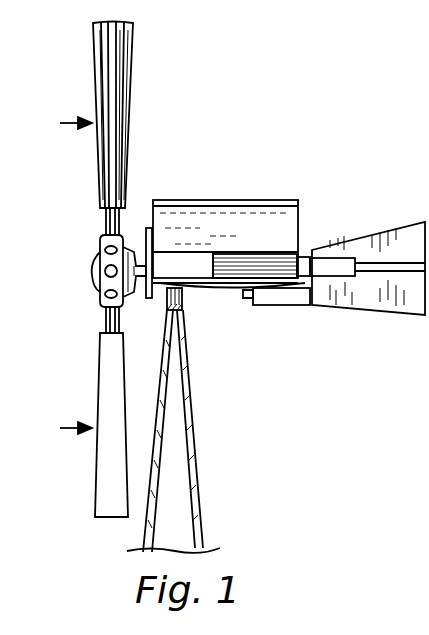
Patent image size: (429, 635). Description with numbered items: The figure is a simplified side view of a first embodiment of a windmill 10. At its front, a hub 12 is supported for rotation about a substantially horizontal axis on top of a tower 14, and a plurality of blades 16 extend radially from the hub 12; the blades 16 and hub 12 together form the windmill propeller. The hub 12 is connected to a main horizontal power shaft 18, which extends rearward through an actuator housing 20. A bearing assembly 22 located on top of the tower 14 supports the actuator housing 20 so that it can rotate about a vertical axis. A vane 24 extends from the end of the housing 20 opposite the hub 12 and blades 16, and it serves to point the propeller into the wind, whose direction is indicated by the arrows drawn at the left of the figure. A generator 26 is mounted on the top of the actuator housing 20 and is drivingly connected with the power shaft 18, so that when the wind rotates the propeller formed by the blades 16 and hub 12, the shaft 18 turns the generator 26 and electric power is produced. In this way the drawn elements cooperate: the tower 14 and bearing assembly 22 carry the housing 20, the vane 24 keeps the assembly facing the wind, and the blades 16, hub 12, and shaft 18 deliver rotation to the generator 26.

The windmill 10 is at (194, 182).
The hub 12 is at (97, 275).
The tower 14 is at (196, 430).
The blades 16 is at (121, 67).
The main horizontal power shaft 18 is at (150, 300).
The actuator housing 20 is at (262, 272).
The bearing assembly 22 is at (185, 298).
The vane 24 is at (380, 248).
The generator 26 is at (233, 223).